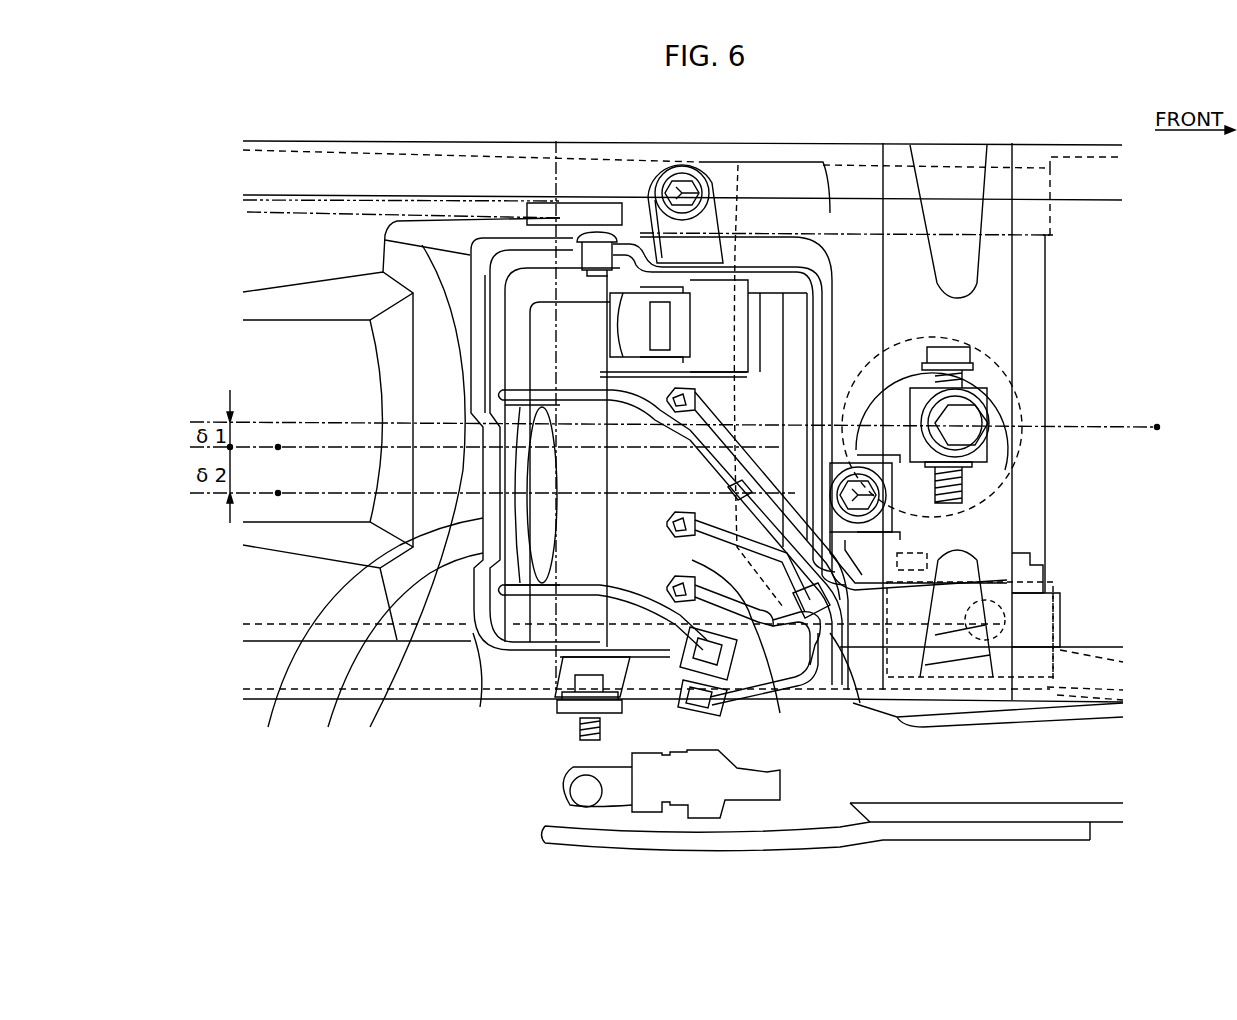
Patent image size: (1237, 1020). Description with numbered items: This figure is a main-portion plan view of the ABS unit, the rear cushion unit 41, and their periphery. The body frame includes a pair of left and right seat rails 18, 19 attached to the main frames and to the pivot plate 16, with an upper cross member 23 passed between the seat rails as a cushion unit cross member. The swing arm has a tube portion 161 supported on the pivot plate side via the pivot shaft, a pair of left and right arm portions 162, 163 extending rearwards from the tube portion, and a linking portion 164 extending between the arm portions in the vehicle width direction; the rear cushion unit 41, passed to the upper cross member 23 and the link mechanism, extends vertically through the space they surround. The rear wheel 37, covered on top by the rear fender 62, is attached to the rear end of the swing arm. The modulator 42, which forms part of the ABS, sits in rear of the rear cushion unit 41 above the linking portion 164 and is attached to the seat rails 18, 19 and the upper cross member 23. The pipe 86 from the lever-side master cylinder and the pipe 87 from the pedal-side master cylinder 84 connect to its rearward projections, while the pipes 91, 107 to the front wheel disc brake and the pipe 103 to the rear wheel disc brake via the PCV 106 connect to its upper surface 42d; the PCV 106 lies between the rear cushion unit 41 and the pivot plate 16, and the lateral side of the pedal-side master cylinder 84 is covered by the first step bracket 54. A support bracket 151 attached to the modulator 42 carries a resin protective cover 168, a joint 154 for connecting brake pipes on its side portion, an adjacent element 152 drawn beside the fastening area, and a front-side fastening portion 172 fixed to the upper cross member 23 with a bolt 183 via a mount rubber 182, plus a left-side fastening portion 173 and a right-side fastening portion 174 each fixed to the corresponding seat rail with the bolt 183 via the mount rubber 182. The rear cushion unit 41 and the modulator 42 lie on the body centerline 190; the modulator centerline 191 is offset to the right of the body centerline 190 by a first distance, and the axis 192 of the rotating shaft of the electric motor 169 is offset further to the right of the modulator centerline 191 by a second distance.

The pivot plate 16 is at (1107, 822).
The seat rail 18 is at (527, 197).
The seat rail 19 is at (410, 700).
The upper cross member 23 is at (1013, 371).
The rear wheel 37 is at (407, 262).
The rear cushion unit 41 is at (1000, 350).
The modulator 42 is at (525, 283).
The upper surface 42d is at (793, 633).
The first step bracket 54 is at (550, 838).
The rear fender 62 is at (270, 303).
The pedal-side master cylinder 84 is at (595, 808).
The pipe 86 is at (485, 275).
The pipe 87 is at (477, 637).
The pipe 91 is at (740, 330).
The pipe 103 is at (855, 690).
The PCV 106 is at (1035, 607).
The pipe 107 is at (960, 710).
The support bracket 151 is at (848, 291).
The bracket 152 is at (1030, 578).
The joint 154 is at (717, 720).
The tube portion 161 is at (1080, 157).
The arm portion 162 is at (785, 170).
The arm portion 163 is at (388, 693).
The linking portion 164 is at (823, 262).
The protective cover 168 is at (364, 635).
The electric motor 169 is at (432, 579).
The front-side fastening portion 172 is at (850, 548).
The left-side fastening portion 173 is at (648, 183).
The right-side fastening portion 174 is at (570, 670).
The mount rubber 182 is at (678, 178).
The bolt 183 is at (690, 182).
The body centerline 190 is at (1157, 427).
The modulator centerline 191 is at (278, 447).
The axis 192 is at (278, 493).